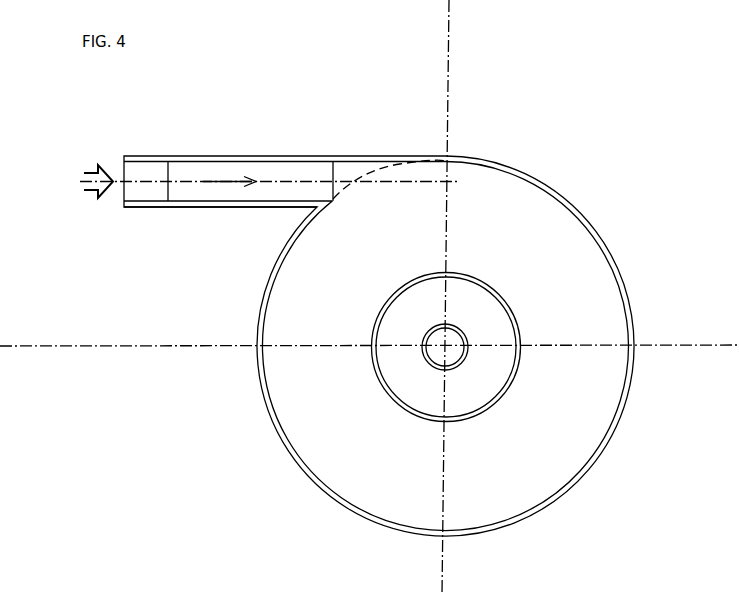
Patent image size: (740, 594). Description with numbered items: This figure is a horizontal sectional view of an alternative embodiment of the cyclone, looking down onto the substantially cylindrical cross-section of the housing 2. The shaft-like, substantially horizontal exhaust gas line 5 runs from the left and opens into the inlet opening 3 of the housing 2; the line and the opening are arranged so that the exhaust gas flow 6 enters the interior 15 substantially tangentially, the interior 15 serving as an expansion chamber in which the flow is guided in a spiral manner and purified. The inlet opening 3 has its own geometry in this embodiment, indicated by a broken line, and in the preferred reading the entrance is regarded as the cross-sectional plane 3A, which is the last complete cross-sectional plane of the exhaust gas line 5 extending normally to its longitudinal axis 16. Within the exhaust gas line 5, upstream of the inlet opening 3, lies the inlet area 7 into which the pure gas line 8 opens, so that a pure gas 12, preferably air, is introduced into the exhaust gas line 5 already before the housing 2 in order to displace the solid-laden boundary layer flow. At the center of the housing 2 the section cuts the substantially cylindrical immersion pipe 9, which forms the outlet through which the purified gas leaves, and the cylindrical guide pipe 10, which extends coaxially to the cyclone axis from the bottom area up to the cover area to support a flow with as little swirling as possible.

The housing 2 is at (620, 272).
The inlet opening 3 is at (367, 182).
The cross-sectional plane 3A is at (331, 195).
The exhaust gas line 5 is at (235, 207).
The exhaust gas flow 6 is at (76, 181).
The inlet area 7 is at (167, 197).
The pure gas line 8 is at (205, 170).
The immersion pipe 9 is at (473, 415).
The guide pipe 10 is at (462, 357).
The pure gas 12 is at (76, 181).
The interior 15 is at (535, 281).
The longitudinal axis 16 is at (288, 182).